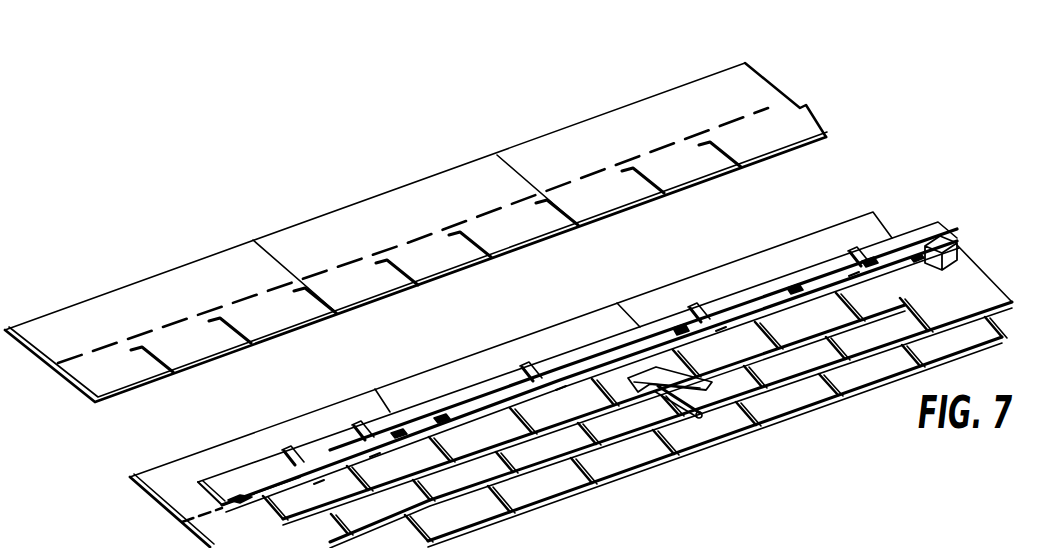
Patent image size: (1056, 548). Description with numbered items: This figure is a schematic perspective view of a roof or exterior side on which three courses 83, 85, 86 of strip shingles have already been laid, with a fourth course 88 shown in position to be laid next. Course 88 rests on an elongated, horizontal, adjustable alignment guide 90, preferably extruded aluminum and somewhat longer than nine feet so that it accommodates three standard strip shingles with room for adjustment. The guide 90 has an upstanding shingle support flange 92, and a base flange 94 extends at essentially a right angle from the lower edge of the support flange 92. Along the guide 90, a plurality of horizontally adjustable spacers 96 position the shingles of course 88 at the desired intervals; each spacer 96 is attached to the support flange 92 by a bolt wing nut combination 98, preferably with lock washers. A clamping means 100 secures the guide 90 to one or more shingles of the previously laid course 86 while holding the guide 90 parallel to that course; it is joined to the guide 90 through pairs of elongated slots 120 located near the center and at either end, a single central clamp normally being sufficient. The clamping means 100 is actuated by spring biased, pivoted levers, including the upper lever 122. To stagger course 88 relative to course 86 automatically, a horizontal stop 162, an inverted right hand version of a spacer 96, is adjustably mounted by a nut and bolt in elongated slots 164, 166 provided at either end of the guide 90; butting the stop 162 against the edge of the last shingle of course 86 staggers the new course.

The course of previously laid strip shingles 83 is at (706, 432).
The course of previously laid strip shingles 85 is at (671, 396).
The course of previously laid strip shingles 86 is at (584, 409).
The fourth course 88 is at (129, 368).
The alignment guide 90 is at (536, 352).
The shingle support flange 92 is at (281, 480).
The base flange 94 is at (224, 487).
The spacer 96 is at (283, 452).
The bolt wing nut combination 98 is at (320, 482).
The clamping means 100 is at (699, 424).
The elongated slot 120 is at (448, 425).
The upper lever 122 is at (695, 352).
The horizontal stop 162 is at (948, 266).
The elongated slot 164 is at (244, 505).
The elongated slot 166 is at (917, 256).